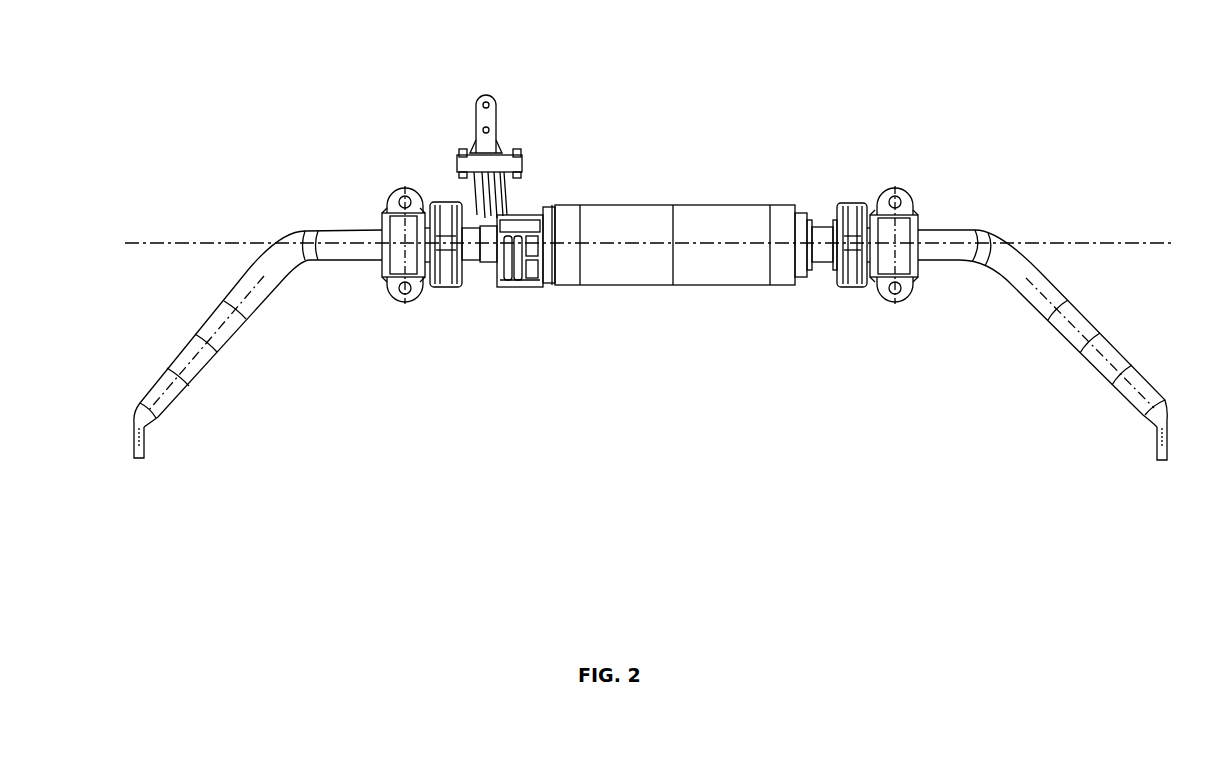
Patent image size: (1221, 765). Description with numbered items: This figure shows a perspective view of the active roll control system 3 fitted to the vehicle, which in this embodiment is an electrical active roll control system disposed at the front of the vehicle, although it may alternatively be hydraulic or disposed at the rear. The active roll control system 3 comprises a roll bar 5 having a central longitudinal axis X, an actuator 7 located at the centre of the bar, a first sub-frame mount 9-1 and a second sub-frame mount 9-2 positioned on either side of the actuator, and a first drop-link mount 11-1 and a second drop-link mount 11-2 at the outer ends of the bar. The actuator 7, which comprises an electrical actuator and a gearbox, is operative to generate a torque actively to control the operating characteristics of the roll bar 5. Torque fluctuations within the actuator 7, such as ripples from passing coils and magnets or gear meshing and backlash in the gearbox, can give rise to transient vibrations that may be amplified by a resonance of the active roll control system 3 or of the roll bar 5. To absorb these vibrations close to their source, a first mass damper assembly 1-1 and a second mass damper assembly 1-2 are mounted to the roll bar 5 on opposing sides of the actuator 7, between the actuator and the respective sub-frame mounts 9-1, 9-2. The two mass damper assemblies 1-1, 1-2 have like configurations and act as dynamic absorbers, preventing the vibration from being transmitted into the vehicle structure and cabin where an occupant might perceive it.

The active roll control system 3 is at (240, 151).
The roll bar 5 is at (950, 233).
The actuator 7 is at (693, 217).
The first sub-frame mount 9-1 is at (406, 228).
The second sub-frame mount 9-2 is at (900, 228).
The first mass damper assembly 1-1 is at (452, 265).
The second mass damper assembly 1-2 is at (852, 265).
The first drop-link mount 11-1 is at (139, 430).
The second drop-link mount 11-2 is at (1155, 442).